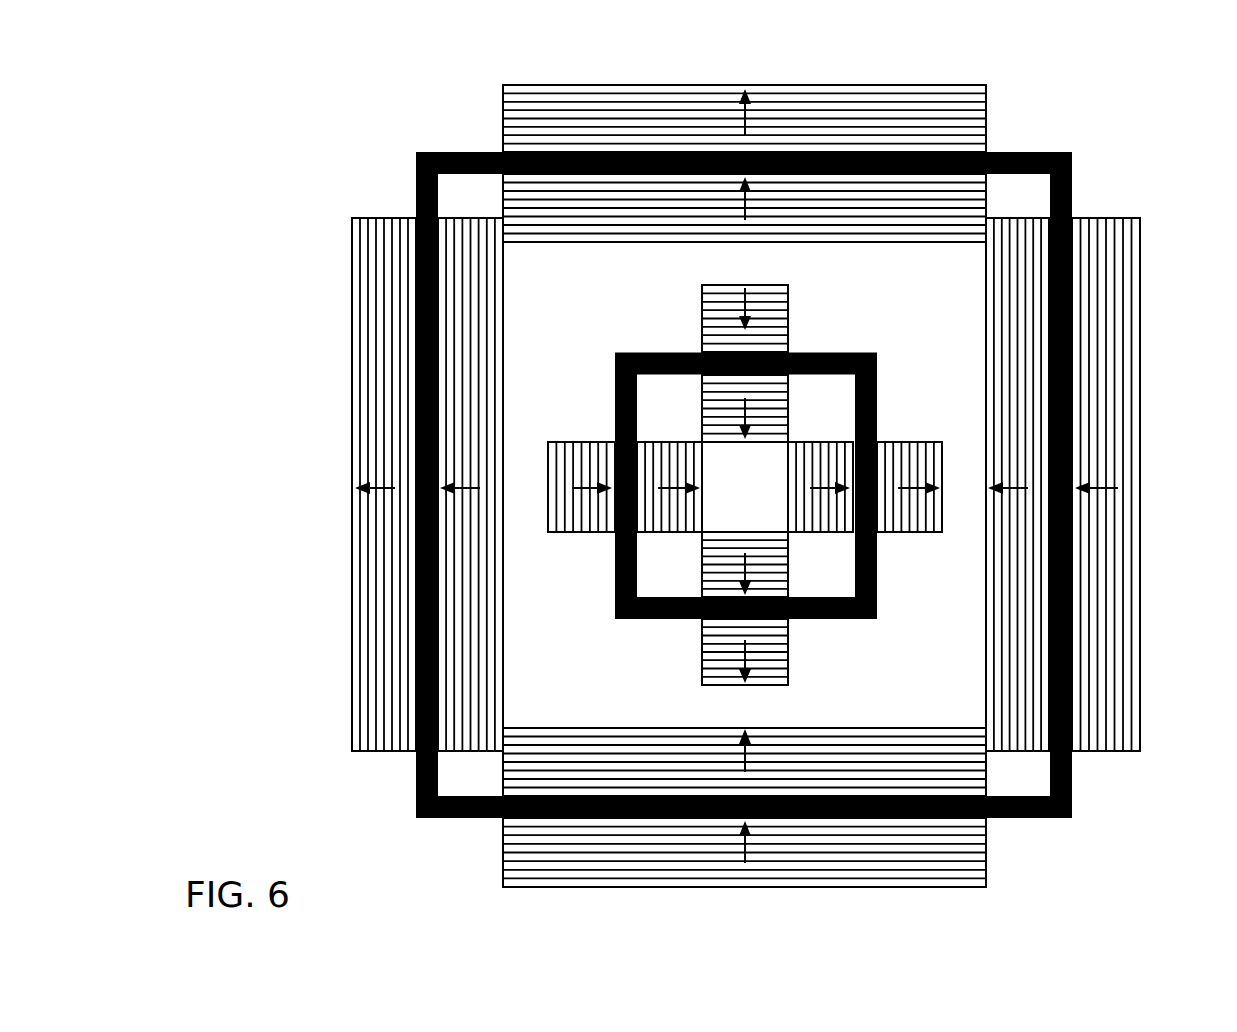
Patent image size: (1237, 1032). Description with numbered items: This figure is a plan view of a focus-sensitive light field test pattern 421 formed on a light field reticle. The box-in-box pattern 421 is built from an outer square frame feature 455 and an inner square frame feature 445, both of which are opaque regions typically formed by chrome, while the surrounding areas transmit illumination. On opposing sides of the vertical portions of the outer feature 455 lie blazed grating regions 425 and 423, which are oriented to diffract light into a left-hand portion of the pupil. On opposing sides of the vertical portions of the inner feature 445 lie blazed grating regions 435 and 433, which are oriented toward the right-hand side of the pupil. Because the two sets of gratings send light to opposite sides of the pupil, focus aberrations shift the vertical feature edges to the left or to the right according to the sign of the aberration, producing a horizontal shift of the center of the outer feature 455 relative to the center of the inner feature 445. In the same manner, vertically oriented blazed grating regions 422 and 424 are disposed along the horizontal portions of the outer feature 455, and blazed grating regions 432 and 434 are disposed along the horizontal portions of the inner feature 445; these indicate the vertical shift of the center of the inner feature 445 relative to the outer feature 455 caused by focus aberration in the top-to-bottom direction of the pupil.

The focus sensitive pattern 421 is at (318, 96).
The blazed grating region 422 is at (843, 103).
The blazed grating region 423 is at (1118, 275).
The blazed grating region 424 is at (818, 737).
The blazed grating region 425 is at (372, 300).
The blazed grating region 432 is at (776, 313).
The blazed grating region 433 is at (895, 453).
The blazed grating region 434 is at (715, 567).
The blazed grating region 435 is at (565, 452).
The inner square frame feature 445 is at (832, 619).
The outer square frame feature 455 is at (1018, 148).